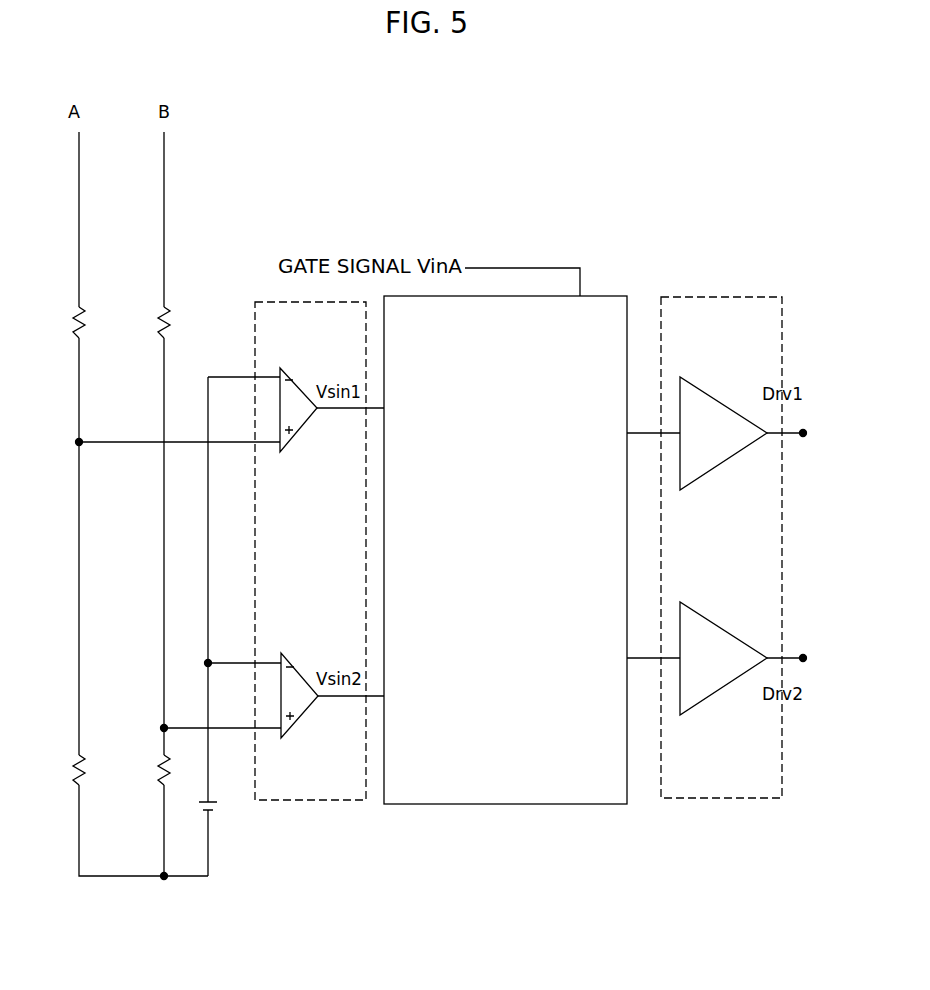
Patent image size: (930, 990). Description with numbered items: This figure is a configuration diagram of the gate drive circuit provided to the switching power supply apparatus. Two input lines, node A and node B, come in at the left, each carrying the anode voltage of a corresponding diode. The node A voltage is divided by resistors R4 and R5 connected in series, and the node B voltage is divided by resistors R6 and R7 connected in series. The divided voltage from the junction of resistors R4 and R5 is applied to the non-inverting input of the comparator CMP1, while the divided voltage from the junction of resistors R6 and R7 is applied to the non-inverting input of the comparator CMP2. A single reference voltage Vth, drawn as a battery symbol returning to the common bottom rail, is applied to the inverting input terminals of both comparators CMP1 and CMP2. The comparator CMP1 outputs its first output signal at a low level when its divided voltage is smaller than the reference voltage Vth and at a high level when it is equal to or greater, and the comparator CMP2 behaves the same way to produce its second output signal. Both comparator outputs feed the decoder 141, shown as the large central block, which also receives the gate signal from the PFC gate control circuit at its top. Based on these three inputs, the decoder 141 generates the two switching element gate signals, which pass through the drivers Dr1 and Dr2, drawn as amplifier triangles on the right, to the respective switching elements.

The decoder 141 is at (495, 804).
The comparator CMP1 is at (291, 452).
The comparator CMP2 is at (292, 738).
The driver Dr1 is at (744, 412).
The driver Dr2 is at (744, 637).
The resistor R4 is at (65, 322).
The resistor R5 is at (66, 770).
The resistor R6 is at (150, 322).
The resistor R7 is at (151, 770).
The reference voltage Vth is at (224, 811).